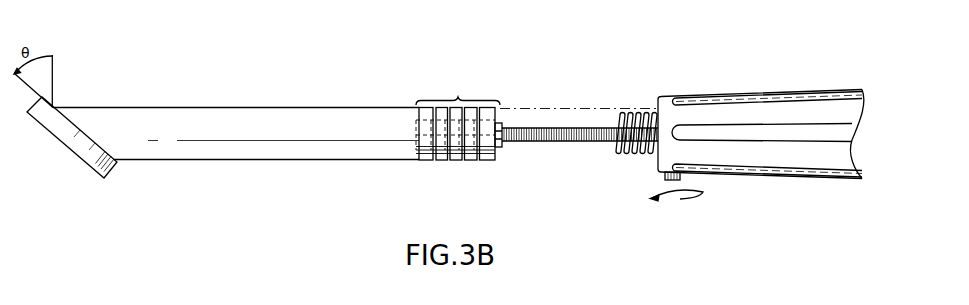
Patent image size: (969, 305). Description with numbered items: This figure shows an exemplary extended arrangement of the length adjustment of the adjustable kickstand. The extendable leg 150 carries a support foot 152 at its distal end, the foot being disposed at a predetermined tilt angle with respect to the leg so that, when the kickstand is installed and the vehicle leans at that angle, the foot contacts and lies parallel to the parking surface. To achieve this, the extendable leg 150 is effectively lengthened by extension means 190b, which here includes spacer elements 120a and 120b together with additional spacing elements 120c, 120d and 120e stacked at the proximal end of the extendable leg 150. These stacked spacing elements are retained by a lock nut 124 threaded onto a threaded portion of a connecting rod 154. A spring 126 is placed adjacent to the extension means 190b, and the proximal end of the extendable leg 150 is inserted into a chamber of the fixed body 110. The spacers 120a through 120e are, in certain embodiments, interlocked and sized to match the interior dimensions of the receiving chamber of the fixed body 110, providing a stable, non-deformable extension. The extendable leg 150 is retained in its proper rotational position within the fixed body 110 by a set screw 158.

The fixed body 110 is at (765, 177).
The spacer element 120a is at (423, 160).
The spacer element 120b is at (482, 160).
The additional spacing element 120c is at (438, 160).
The additional spacing element 120d is at (453, 160).
The additional spacing element 120e is at (467, 160).
The lock nut 124 is at (498, 150).
The spring 126 is at (633, 112).
The extendable leg 150 is at (235, 107).
The support foot 152 is at (114, 173).
The connecting rod 154 is at (550, 127).
The set screw 158 is at (663, 176).
The extension means 190b is at (458, 115).